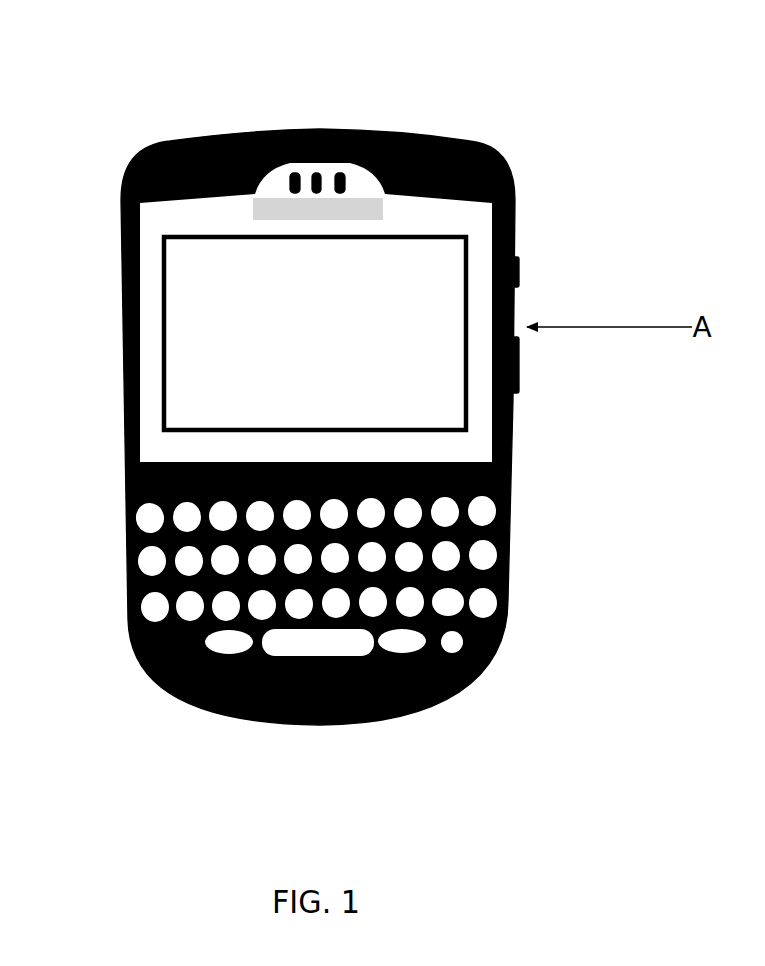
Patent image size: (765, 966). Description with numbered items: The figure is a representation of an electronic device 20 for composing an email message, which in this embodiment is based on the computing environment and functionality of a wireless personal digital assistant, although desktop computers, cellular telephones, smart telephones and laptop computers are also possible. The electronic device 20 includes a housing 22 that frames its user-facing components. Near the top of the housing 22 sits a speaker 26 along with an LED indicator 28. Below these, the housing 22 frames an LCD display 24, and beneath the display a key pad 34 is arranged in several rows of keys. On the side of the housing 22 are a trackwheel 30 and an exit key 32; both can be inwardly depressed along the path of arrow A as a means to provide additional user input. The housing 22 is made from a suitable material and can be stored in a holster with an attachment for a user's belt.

The electronic device 20 is at (561, 104).
The housing 22 is at (445, 702).
The LCD display 24 is at (184, 323).
The speaker 26 is at (307, 165).
The LED indicator 28 is at (460, 148).
The trackwheel 30 is at (515, 268).
The exit key 32 is at (516, 365).
The key pad 34 is at (448, 604).